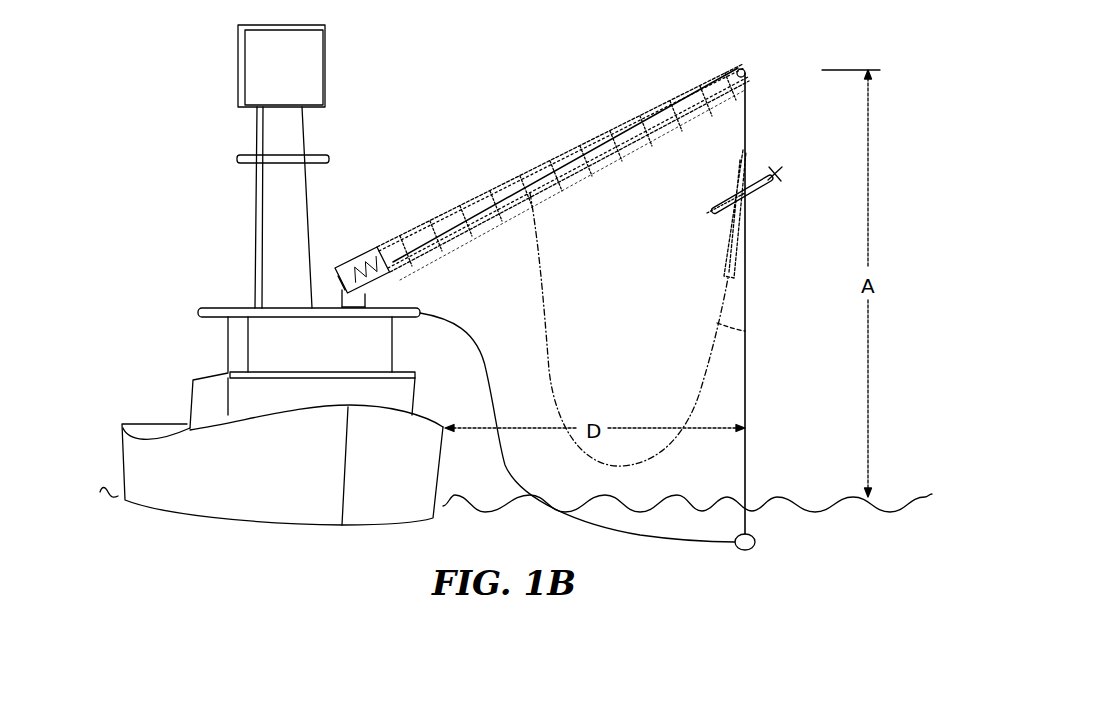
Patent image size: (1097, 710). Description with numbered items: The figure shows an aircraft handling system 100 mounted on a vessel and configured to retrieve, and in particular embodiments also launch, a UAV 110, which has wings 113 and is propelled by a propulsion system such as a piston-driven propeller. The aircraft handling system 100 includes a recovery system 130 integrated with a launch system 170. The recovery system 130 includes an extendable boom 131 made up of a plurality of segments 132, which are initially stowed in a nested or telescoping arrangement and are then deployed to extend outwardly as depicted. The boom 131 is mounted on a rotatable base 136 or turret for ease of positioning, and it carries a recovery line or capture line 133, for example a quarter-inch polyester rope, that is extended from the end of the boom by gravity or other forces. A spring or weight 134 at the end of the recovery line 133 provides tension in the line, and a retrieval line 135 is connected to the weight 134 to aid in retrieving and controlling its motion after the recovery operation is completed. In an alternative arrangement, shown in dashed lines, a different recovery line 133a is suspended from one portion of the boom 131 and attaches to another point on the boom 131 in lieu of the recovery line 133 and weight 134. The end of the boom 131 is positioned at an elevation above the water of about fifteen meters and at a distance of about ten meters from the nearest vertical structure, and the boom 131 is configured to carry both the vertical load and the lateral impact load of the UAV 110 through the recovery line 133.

The aircraft handling system 100 is at (360, 190).
The launch system 170 is at (417, 209).
The recovery system 130 is at (580, 133).
The extendable boom 131 is at (553, 183).
The segments 132 is at (690, 90).
The recovery line 133 is at (748, 113).
The recovery line 133a is at (748, 336).
The weight 134 is at (757, 543).
The retrieval line 135 is at (490, 363).
The rotatable base 136 is at (365, 302).
The wings 113 is at (735, 175).
The UAV 110 is at (757, 200).